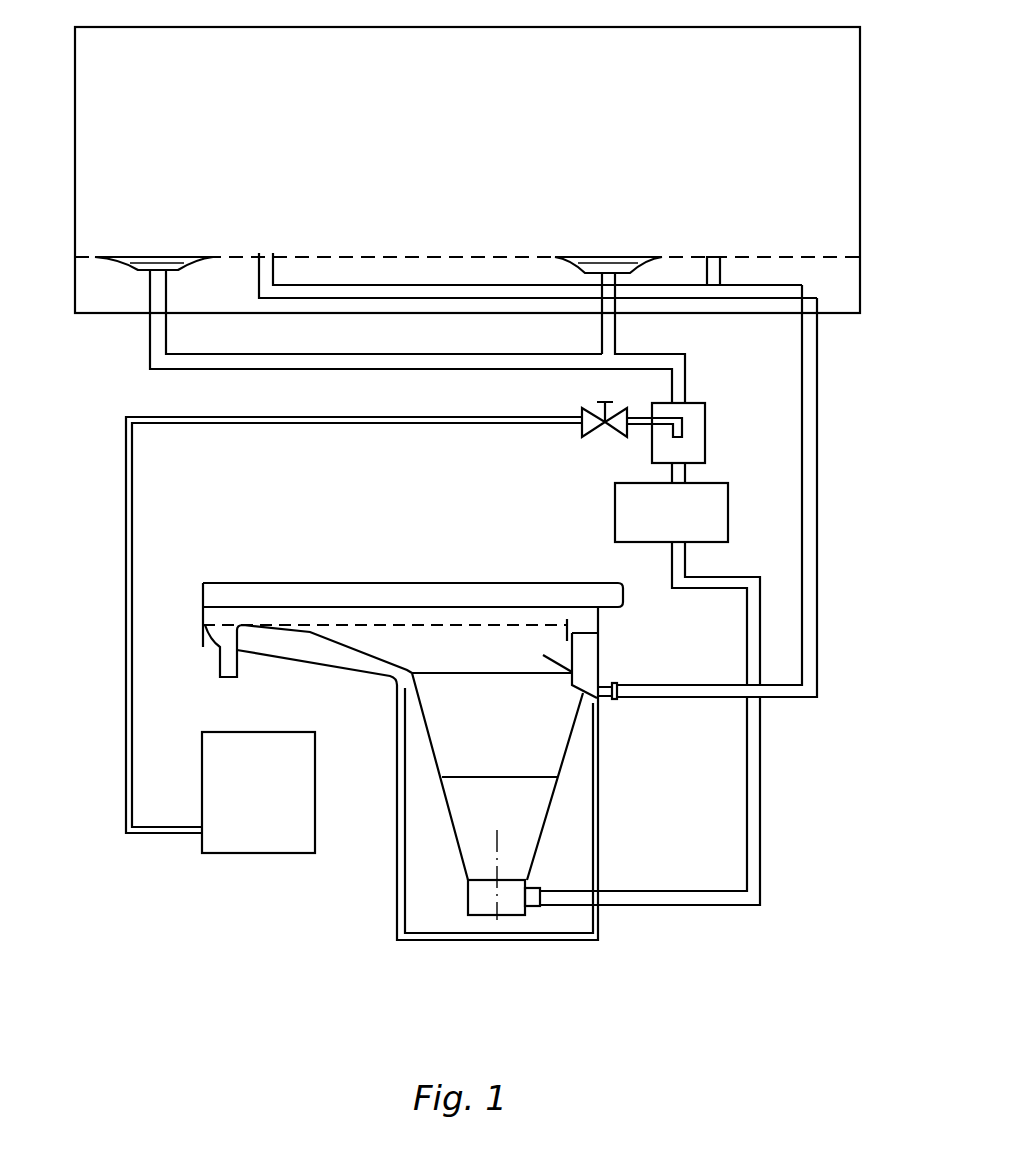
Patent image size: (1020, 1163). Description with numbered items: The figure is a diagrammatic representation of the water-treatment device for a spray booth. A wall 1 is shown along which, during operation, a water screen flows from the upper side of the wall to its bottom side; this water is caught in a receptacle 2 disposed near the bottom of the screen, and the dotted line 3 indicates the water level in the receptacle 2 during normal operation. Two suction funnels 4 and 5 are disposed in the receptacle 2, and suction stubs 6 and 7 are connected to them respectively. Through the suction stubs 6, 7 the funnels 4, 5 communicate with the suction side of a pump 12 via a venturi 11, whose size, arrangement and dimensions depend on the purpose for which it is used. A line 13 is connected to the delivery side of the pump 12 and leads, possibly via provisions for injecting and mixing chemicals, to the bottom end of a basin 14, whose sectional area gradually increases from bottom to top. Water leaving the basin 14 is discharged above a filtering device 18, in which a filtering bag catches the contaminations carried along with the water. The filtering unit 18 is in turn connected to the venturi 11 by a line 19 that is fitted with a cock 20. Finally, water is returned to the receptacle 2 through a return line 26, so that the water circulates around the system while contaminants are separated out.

The wall 1 is at (856, 105).
The receptacle 2 is at (830, 275).
The dotted line 3 is at (360, 256).
The suction funnel 4 is at (165, 255).
The suction funnel 5 is at (590, 255).
The suction stub 6 is at (148, 352).
The suction stub 7 is at (615, 335).
The venturi 11 is at (700, 423).
The pump 12 is at (700, 510).
The line 13 is at (757, 788).
The basin 14 is at (557, 792).
The filtering device 18 is at (305, 783).
The line 19 is at (125, 563).
The cock 20 is at (583, 420).
The return line 26 is at (815, 500).